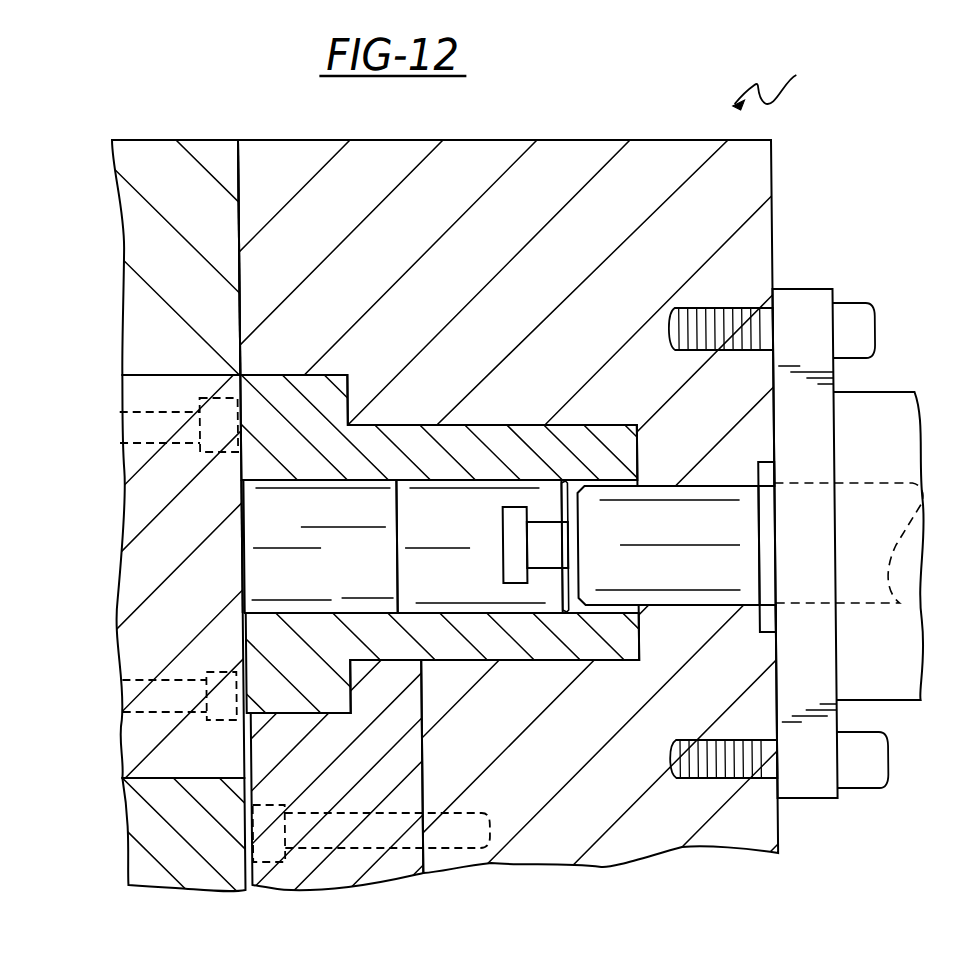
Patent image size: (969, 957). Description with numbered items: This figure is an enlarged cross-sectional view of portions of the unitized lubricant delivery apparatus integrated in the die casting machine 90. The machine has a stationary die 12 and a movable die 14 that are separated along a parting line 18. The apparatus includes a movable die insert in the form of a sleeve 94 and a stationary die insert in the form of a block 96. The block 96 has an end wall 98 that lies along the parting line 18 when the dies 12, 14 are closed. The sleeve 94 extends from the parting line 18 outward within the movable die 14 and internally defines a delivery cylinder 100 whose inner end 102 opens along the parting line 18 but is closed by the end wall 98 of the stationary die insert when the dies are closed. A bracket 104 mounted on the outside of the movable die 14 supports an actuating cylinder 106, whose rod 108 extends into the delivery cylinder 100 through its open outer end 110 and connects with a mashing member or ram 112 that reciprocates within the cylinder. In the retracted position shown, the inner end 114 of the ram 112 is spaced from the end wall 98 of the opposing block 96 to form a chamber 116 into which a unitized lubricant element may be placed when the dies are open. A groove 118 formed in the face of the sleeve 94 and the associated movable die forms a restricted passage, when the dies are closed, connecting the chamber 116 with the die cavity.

The stationary die 12 is at (160, 140).
The movable die 14 is at (607, 140).
The parting line 18 is at (238, 178).
The die casting machine 90 is at (782, 86).
The sleeve 94 is at (434, 425).
The block 96 is at (151, 375).
The end wall 98 is at (237, 463).
The delivery cylinder 100 is at (263, 607).
The inner end 102 is at (236, 508).
The bracket 104 is at (802, 290).
The actuating cylinder 106 is at (881, 392).
The rod 108 is at (734, 486).
The open outer end 110 is at (735, 610).
The ram 112 is at (533, 598).
The inner end 114 is at (393, 566).
The chamber 116 is at (269, 563).
The groove 118 is at (245, 850).